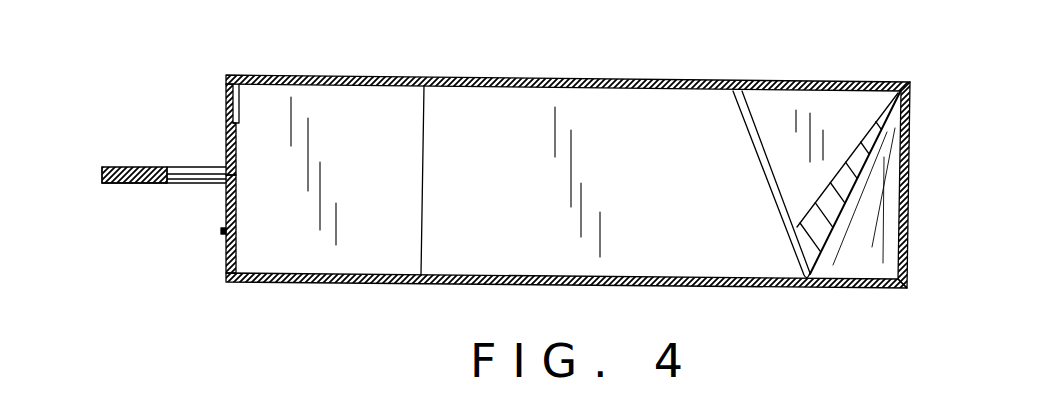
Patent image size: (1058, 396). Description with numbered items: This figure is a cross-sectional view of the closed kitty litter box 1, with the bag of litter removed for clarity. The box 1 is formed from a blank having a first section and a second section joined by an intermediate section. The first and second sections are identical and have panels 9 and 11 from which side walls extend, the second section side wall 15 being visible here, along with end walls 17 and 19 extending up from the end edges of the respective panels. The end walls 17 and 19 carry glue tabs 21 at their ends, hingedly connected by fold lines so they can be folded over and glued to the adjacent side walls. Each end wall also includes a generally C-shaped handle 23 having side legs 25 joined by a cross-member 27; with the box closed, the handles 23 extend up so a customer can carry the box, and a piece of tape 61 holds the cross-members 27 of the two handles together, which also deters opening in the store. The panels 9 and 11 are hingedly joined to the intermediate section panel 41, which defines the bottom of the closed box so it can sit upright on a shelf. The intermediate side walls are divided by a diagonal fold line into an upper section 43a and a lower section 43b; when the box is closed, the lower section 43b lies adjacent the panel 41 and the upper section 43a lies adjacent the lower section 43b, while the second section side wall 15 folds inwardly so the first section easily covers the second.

The kitty litter box 1 is at (572, 164).
The panel 9 is at (553, 78).
The panel 11 is at (582, 287).
The side wall 15 is at (660, 195).
The end wall 17 is at (225, 89).
The end wall 19 is at (227, 247).
The glue tab 21 is at (282, 188).
The handle 23 is at (141, 160).
The side leg 25 is at (197, 185).
The cross-member 27 is at (140, 183).
The panel 41 is at (908, 201).
The upper section 43a is at (868, 252).
The lower section 43b is at (808, 128).
The piece of tape 61 is at (151, 169).